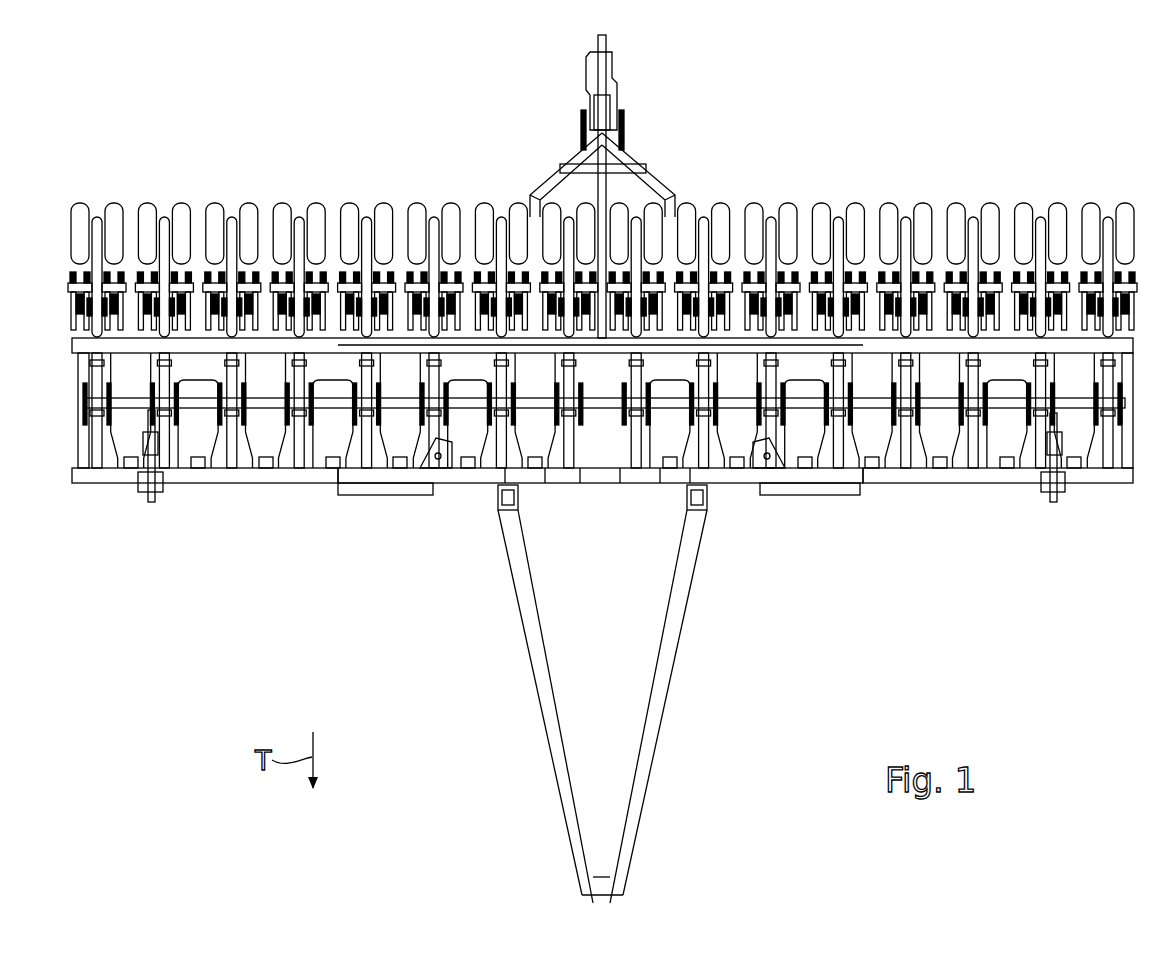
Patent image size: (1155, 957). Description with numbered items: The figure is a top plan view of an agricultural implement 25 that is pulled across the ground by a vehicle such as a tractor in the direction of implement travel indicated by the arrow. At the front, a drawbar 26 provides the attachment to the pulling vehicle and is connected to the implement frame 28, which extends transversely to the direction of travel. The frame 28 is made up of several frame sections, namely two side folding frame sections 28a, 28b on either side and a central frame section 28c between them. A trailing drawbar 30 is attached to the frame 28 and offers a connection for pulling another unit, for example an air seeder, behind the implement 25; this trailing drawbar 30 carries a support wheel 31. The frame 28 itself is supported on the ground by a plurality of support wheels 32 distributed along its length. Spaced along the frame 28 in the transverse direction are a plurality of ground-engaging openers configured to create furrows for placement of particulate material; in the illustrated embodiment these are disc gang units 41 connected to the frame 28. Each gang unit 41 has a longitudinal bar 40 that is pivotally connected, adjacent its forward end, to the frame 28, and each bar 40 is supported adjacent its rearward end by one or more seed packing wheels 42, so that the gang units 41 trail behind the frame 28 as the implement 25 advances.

The agricultural implement 25 is at (834, 592).
The drawbar 26 is at (660, 718).
The implement frame 28 is at (640, 487).
The side folding frame section 28a is at (287, 473).
The side folding frame section 28b is at (935, 478).
The central frame section 28c is at (598, 478).
The trailing drawbar 30 is at (632, 168).
The support wheel 31 is at (616, 84).
The support wheels 32 is at (120, 432).
The longitudinal bar 40 is at (357, 330).
The disc gang units 41 is at (366, 199).
The seed packing wheels 42 is at (148, 215).